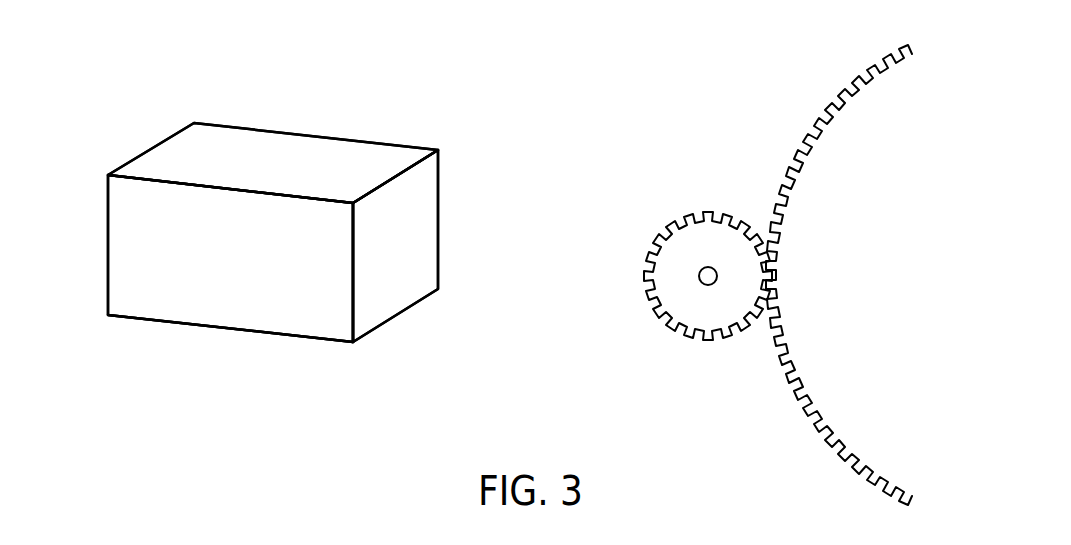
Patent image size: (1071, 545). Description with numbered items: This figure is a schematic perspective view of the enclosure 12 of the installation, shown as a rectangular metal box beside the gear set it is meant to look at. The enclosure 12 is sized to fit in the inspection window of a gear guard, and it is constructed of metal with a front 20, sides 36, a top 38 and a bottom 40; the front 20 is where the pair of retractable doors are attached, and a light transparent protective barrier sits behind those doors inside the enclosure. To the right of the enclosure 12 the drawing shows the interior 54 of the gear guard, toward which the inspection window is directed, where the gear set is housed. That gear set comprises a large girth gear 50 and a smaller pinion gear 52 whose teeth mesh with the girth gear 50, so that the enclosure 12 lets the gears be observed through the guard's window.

The enclosure 12 is at (146, 112).
The front 20 is at (395, 283).
The sides 36 is at (218, 260).
The top 38 is at (305, 150).
The bottom 40 is at (295, 337).
The girth gear 50 is at (857, 100).
The pinion gear 52 is at (712, 240).
The interior 54 is at (573, 137).